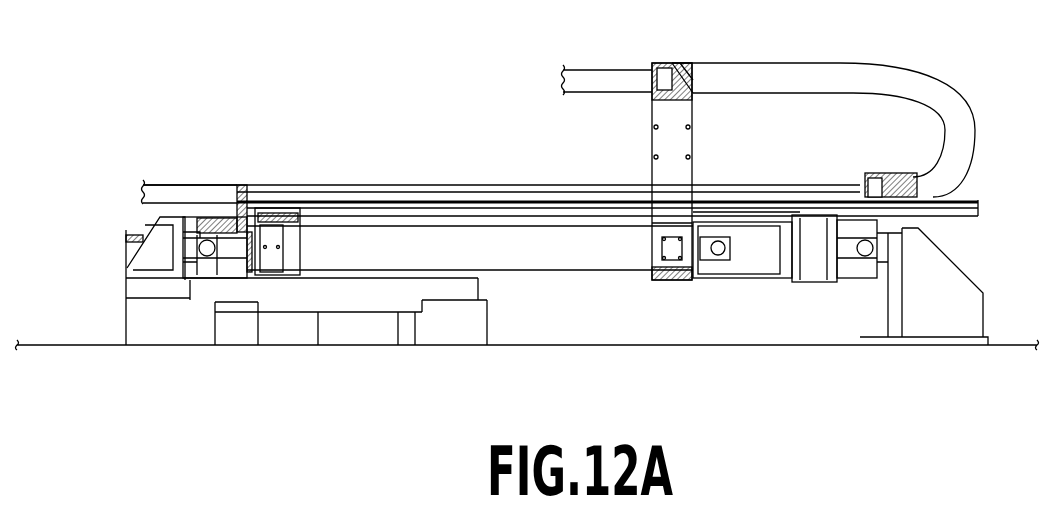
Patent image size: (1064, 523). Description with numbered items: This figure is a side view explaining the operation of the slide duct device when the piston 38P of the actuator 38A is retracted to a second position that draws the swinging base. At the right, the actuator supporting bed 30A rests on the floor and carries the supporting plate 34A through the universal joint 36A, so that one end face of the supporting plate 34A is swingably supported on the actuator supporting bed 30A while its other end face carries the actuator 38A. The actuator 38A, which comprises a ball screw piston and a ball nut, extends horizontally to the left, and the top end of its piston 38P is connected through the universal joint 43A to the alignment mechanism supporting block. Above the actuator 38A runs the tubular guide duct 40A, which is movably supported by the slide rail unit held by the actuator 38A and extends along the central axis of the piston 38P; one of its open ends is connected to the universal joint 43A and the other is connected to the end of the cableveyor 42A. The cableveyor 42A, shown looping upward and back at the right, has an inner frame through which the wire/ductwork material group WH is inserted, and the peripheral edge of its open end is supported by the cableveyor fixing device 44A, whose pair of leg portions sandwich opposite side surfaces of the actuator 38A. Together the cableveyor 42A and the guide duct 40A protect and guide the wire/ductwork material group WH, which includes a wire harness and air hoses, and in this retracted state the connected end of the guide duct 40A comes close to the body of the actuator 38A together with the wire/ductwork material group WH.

The wire/ductwork material group WH is at (197, 195).
The actuator supporting bed 30A is at (960, 297).
The supporting plate 34A is at (828, 282).
The universal joint 36A is at (858, 287).
The actuator 38A is at (560, 262).
The piston 38P is at (248, 278).
The guide duct 40A is at (430, 192).
The cableveyor 42A is at (780, 68).
The universal joint 43A is at (202, 278).
The cableveyor fixing device 44A is at (652, 145).